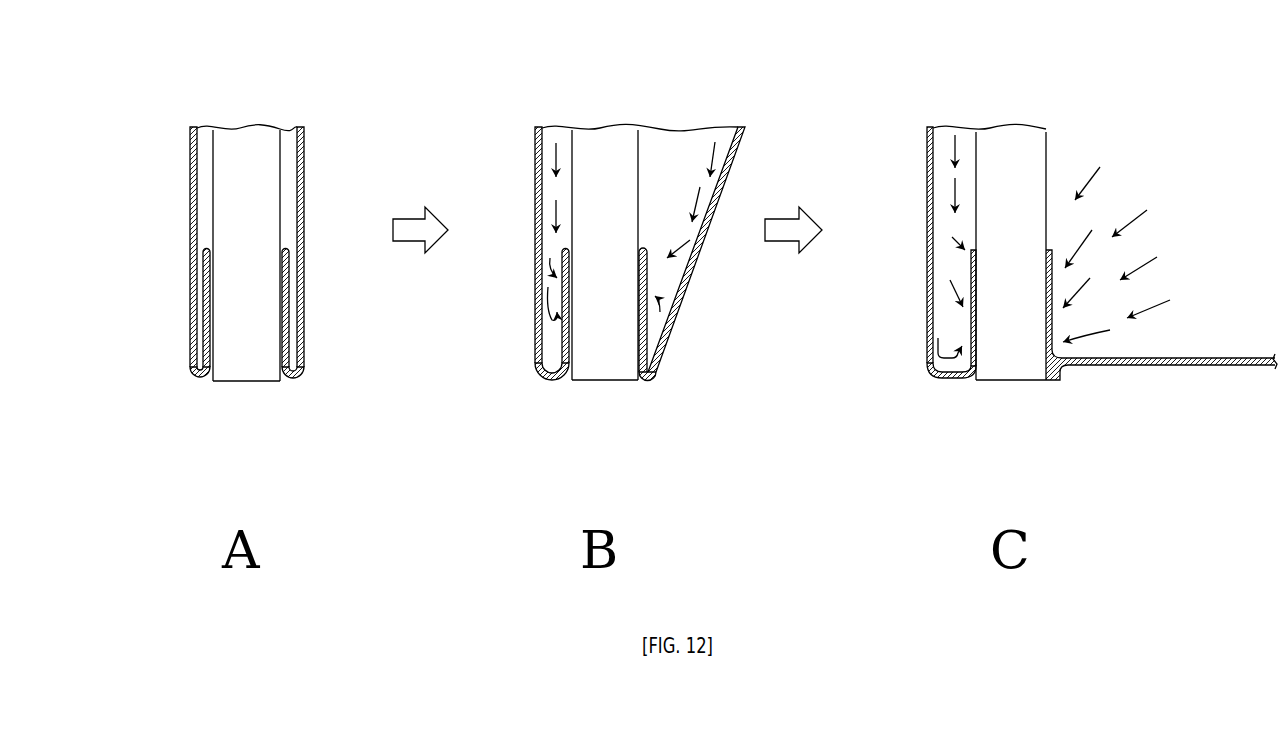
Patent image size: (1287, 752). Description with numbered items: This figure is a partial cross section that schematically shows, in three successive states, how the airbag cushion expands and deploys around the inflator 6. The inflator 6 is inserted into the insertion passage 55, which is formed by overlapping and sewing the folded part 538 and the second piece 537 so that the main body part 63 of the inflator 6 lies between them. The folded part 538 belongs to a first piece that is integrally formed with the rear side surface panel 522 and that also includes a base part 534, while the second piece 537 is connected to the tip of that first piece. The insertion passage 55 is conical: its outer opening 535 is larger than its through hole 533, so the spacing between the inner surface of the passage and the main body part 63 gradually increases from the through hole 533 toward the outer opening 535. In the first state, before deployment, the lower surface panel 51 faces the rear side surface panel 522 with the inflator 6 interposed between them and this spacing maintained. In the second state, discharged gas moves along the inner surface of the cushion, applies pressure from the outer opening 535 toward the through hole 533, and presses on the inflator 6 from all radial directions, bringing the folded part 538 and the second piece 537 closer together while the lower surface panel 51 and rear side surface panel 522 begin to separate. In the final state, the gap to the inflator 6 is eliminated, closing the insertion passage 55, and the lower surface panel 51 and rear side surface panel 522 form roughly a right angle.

The inflator 6 is at (219, 112).
The main body part 63 is at (238, 140).
The lower surface panel 51 is at (304, 183).
The insertion passage 55 is at (289, 357).
The rear side surface panel 522 is at (190, 182).
The through hole 533 is at (283, 247).
The base part 534 is at (196, 373).
The outer opening 535 is at (280, 388).
The second piece 537 is at (289, 300).
The folded part 538 is at (207, 290).